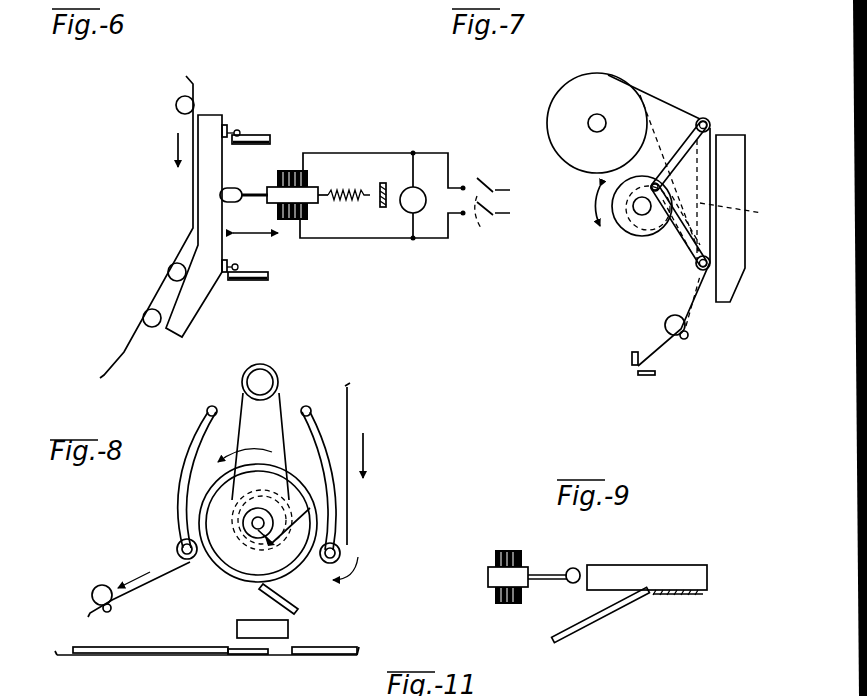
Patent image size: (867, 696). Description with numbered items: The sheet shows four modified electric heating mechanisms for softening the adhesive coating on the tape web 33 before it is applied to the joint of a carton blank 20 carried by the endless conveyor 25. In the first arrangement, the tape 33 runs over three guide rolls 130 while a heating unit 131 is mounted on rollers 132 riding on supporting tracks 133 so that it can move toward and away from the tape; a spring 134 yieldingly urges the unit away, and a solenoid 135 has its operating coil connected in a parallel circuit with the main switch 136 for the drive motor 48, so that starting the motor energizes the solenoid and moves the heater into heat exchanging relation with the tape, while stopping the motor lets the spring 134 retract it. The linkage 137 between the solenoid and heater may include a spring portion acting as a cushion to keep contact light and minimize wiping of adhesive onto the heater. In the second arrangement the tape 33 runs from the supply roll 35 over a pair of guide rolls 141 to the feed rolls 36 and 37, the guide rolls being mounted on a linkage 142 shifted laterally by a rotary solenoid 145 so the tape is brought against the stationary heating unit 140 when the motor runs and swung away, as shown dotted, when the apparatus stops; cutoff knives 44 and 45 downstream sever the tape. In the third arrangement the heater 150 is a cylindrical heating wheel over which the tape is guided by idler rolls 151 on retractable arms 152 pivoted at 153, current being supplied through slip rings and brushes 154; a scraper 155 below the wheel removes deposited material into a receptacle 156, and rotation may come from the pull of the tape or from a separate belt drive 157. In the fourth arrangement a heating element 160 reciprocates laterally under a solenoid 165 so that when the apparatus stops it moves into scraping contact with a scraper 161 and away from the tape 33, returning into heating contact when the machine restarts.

In FIG. 8, the carton blank 20 is at (103, 656).
In FIG. 8, the endless conveyor 25 is at (278, 657).
In FIG. 6, the web of tape 33 is at (186, 84).
In FIG. 7, the web of tape 33 is at (672, 100).
In FIG. 8, the web of tape 33 is at (350, 416).
In FIG. 9, the web of tape 33 is at (678, 595).
In FIG. 7, the supply roll 35 is at (558, 101).
In FIG. 7, the feed roll 36 is at (665, 322).
In FIG. 8, the feed roll 36 is at (95, 588).
In FIG. 7, the feed roll 37 is at (687, 340).
In FIG. 8, the feed roll 37 is at (111, 611).
In FIG. 7, the cutoff knife 44 is at (630, 358).
In FIG. 7, the cutoff knife 45 is at (648, 377).
In FIG. 6, the drive motor 48 is at (403, 209).
In FIG. 6, the guide roll 130 is at (178, 110).
In FIG. 6, the heating unit 131 is at (203, 226).
In FIG. 6, the roller 132 is at (239, 130).
In FIG. 6, the supporting track 133 is at (270, 138).
In FIG. 6, the spring 134 is at (352, 189).
In FIG. 6, the solenoid 135 is at (285, 221).
In FIG. 6, the main switch 136 is at (493, 214).
In FIG. 6, the linkage 137 is at (249, 187).
In FIG. 7, the heating unit 140 is at (742, 188).
In FIG. 7, the guide roll 141 is at (712, 121).
In FIG. 7, the linkage 142 is at (668, 242).
In FIG. 7, the rotary solenoid 145 is at (631, 241).
In FIG. 8, the heater 150 is at (226, 571).
In FIG. 8, the idler roll 151 is at (175, 543).
In FIG. 8, the retractable arm 152 is at (183, 488).
In FIG. 8, the pivot 153 is at (208, 410).
In FIG. 8, the slip rings and brushes 154 is at (257, 533).
In FIG. 8, the scraper 155 is at (300, 604).
In FIG. 8, the receptacle 156 is at (290, 630).
In FIG. 8, the belt drive 157 is at (280, 398).
In FIG. 9, the heating element 160 is at (685, 570).
In FIG. 9, the scraper 161 is at (592, 618).
In FIG. 9, the solenoid 165 is at (521, 560).